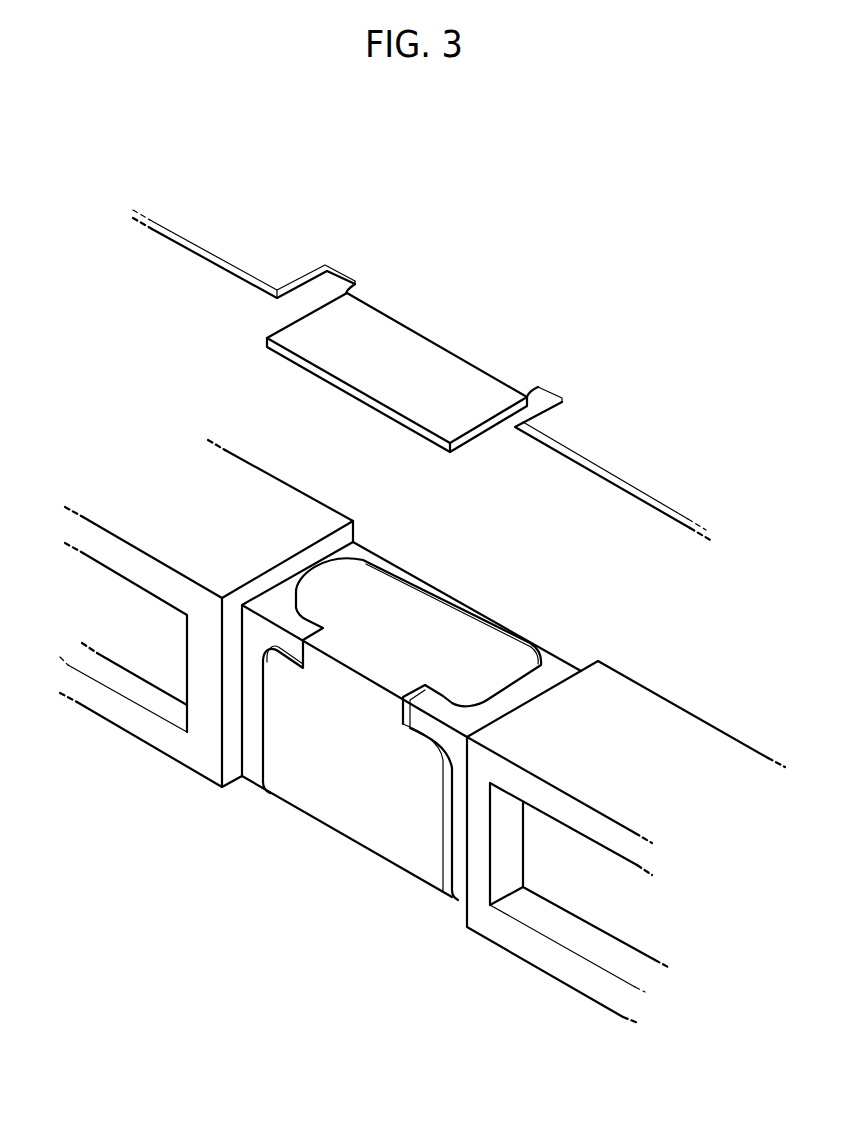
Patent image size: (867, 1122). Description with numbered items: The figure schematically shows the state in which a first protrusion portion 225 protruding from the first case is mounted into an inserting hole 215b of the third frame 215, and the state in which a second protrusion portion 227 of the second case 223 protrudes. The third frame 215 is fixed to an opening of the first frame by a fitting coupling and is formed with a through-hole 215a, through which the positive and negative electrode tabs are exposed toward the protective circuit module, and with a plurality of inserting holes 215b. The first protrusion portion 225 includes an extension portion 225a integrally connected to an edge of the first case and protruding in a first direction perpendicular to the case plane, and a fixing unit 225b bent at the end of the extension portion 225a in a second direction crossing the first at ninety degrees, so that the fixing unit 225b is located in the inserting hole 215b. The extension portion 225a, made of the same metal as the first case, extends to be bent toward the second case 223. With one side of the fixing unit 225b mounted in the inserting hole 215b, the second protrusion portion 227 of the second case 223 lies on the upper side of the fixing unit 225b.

The third frame 215 is at (187, 753).
The through-hole 215a is at (518, 908).
The inserting hole 215b is at (273, 607).
The second case 223 is at (625, 475).
The first protrusion portion 225 is at (411, 757).
The extension portion 225a is at (403, 853).
The fixing unit 225b is at (390, 633).
The second protrusion portion 227 is at (462, 423).